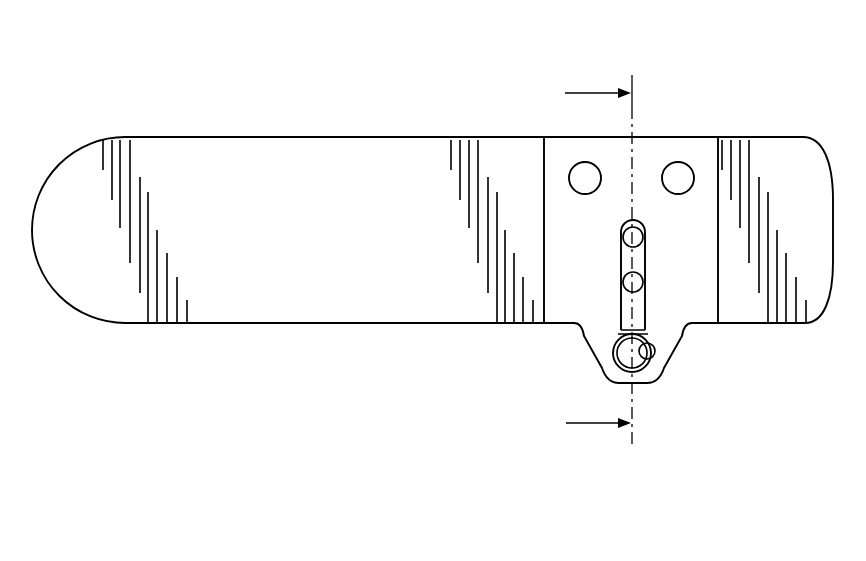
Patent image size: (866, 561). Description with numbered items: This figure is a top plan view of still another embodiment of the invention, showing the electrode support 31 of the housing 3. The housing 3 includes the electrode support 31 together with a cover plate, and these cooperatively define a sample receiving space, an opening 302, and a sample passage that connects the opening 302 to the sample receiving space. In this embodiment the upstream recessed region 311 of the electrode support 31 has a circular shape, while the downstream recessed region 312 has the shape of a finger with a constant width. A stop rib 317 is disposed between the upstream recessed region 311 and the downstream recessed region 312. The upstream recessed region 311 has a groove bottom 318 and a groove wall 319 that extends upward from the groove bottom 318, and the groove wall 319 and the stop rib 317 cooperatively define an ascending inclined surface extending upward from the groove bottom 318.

The housing 3 is at (328, 104).
The electrode support 31 is at (232, 130).
The opening 302 is at (640, 375).
The upstream recessed region 311 is at (655, 352).
The downstream recessed region 312 is at (620, 313).
The stop rib 317 is at (620, 336).
The groove bottom 318 is at (644, 364).
The groove wall 319 is at (647, 332).